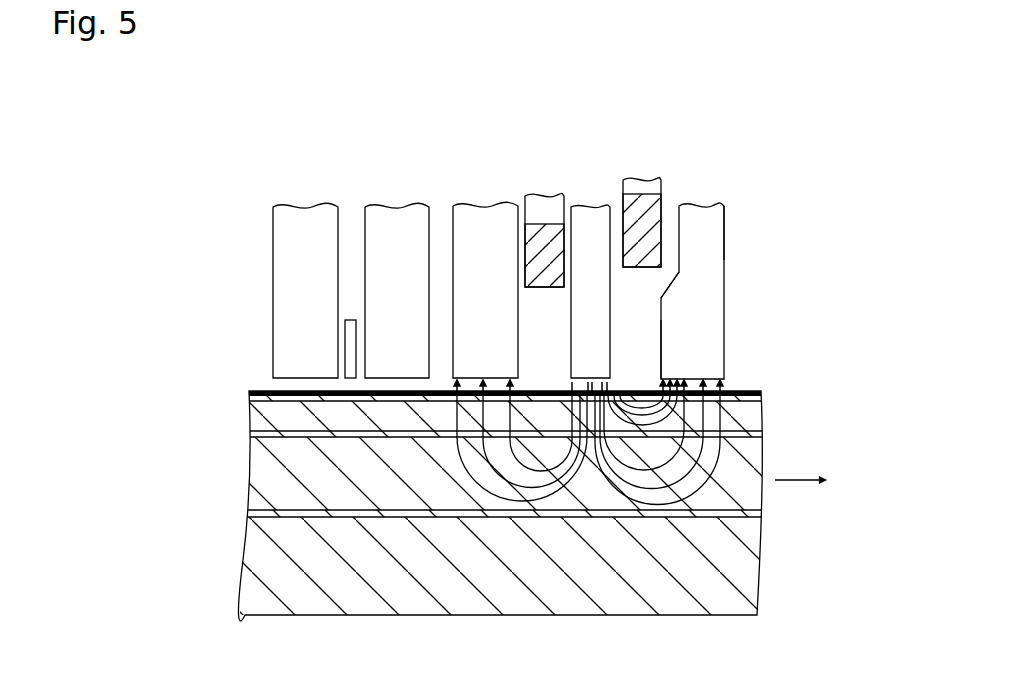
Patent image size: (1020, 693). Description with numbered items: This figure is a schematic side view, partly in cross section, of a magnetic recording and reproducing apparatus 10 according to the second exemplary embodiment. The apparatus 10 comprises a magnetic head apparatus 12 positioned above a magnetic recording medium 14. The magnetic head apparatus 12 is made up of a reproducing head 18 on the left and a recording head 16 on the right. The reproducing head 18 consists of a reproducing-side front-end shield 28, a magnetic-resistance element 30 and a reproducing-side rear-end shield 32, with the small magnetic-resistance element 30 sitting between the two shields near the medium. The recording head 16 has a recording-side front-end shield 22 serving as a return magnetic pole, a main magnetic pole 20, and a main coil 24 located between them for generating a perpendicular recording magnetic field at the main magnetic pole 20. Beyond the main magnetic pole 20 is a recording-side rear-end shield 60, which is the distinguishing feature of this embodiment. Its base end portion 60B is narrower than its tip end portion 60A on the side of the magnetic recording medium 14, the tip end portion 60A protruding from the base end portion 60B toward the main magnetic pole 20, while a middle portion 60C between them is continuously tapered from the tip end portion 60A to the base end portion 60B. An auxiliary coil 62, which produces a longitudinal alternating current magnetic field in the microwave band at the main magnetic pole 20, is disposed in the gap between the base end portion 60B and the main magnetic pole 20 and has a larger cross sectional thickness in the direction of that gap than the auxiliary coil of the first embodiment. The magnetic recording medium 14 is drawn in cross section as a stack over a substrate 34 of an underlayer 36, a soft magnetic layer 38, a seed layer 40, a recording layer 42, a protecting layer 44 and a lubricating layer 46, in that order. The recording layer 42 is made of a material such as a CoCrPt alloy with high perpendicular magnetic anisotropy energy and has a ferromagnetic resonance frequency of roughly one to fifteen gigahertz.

The magnetic recording and reproducing apparatus 10 is at (503, 68).
The magnetic head apparatus 12 is at (228, 280).
The magnetic recording medium 14 is at (220, 460).
The recording head 16 is at (725, 172).
The reproducing head 18 is at (431, 172).
The main magnetic pole 20 is at (588, 207).
The recording-side front-end shield 22 is at (480, 206).
The main coil 24 is at (565, 267).
The reproducing-side front-end shield 28 is at (297, 207).
The magnetic-resistance element 30 is at (357, 337).
The reproducing-side rear-end shield 32 is at (392, 207).
The substrate 34 is at (524, 566).
The underlayer 36 is at (523, 503).
The soft magnetic layer 38 is at (523, 473).
The seed layer 40 is at (523, 440).
The recording layer 42 is at (523, 416).
The protecting layer 44 is at (522, 395).
The lubricating layer 46 is at (522, 379).
The recording-side rear-end shield 60 is at (702, 206).
The tip end portion 60A is at (664, 350).
The base end portion 60B is at (724, 232).
The middle portion 60C is at (672, 298).
The auxiliary coil 62 is at (662, 247).